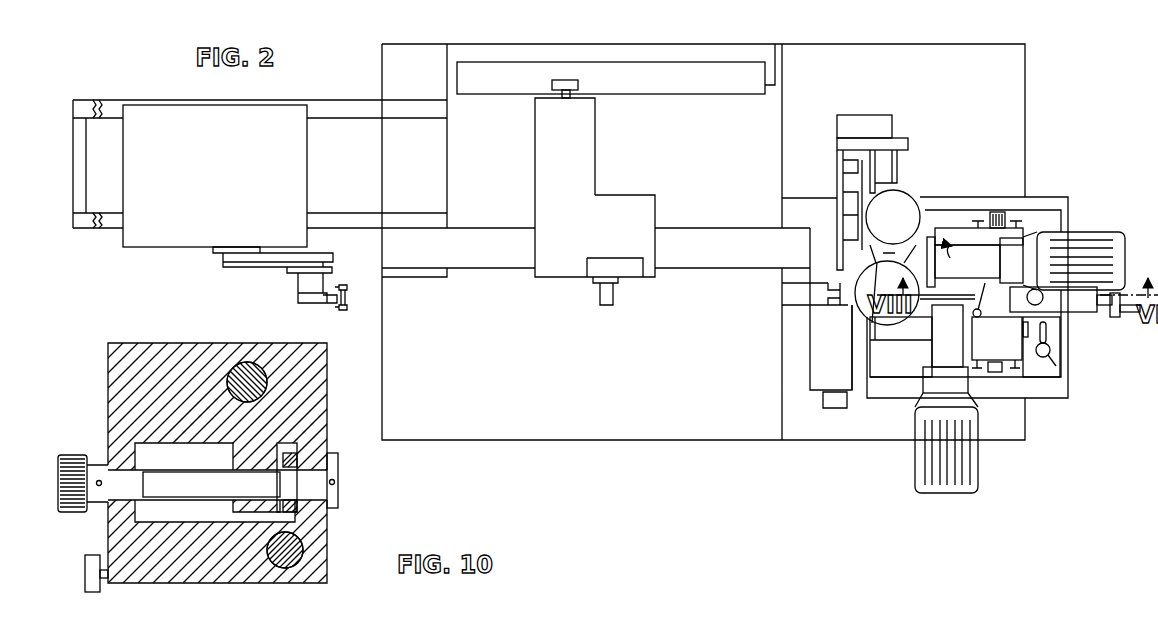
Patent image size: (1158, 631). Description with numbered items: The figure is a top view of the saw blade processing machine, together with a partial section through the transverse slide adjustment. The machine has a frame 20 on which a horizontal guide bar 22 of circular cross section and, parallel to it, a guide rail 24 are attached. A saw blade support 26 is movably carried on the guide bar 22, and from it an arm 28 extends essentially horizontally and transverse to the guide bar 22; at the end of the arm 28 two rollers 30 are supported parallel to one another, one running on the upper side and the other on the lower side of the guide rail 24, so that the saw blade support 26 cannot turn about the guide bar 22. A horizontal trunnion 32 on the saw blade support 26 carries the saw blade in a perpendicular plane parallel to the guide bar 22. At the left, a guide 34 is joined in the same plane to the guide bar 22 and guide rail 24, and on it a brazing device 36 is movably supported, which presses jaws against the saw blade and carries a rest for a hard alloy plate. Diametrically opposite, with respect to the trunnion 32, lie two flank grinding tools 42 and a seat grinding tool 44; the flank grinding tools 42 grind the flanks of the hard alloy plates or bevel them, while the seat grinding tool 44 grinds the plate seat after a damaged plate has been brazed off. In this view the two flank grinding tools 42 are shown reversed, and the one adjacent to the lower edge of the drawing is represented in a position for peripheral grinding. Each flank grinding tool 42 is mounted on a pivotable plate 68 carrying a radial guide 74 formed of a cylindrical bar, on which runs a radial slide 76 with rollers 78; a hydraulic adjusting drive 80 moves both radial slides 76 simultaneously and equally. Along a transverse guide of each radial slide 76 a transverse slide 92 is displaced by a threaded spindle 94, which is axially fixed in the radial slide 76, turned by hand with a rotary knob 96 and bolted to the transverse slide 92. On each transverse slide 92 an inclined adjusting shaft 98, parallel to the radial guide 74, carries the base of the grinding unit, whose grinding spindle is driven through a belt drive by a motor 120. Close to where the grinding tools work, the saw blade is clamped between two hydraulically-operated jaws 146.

In FIG. 2, the frame 20 is at (582, 443).
In FIG. 2, the guide bar 22 is at (690, 240).
In FIG. 2, the guide rail 24 is at (672, 87).
In FIG. 2, the saw blade support 26 is at (560, 279).
In FIG. 2, the arm 28 is at (583, 140).
In FIG. 2, the rollers 30 is at (580, 86).
In FIG. 2, the trunnion 32 is at (604, 306).
In FIG. 2, the guide 34 is at (88, 99).
In FIG. 2, the brazing device 36 is at (241, 268).
In FIG. 2, the flank grinding tools 42 is at (1081, 214).
In FIG. 2, the seat grinding tool 44 is at (910, 127).
In FIG. 2, the plates 68 is at (1043, 378).
In FIG. 10, the radial guide 74 is at (296, 550).
In FIG. 10, the radial slide 76 is at (320, 523).
In FIG. 10, the rollers 78 is at (92, 556).
In FIG. 2, the hydraulic adjusting drive 80 is at (1086, 306).
In FIG. 10, the transverse slide 92 is at (160, 355).
In FIG. 10, the threaded spindle 94 is at (165, 482).
In FIG. 10, the rotary knob 96 is at (75, 455).
In FIG. 10, the inclined adjusting shaft 98 is at (250, 364).
In FIG. 2, the motor 120 is at (1100, 240).
In FIG. 2, the hydraulically-operated jaws 146 is at (832, 284).